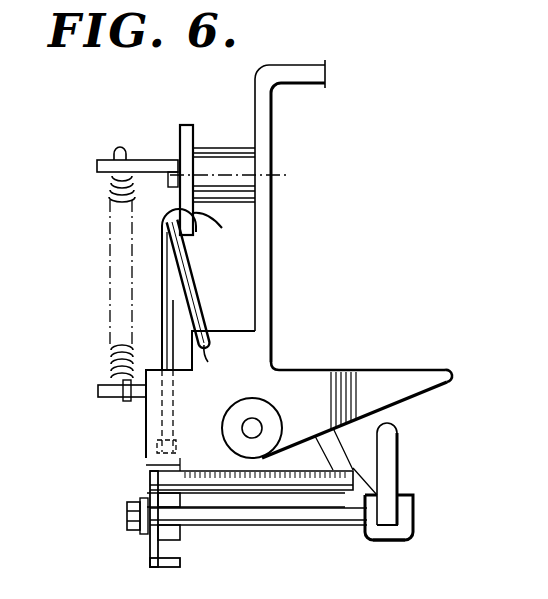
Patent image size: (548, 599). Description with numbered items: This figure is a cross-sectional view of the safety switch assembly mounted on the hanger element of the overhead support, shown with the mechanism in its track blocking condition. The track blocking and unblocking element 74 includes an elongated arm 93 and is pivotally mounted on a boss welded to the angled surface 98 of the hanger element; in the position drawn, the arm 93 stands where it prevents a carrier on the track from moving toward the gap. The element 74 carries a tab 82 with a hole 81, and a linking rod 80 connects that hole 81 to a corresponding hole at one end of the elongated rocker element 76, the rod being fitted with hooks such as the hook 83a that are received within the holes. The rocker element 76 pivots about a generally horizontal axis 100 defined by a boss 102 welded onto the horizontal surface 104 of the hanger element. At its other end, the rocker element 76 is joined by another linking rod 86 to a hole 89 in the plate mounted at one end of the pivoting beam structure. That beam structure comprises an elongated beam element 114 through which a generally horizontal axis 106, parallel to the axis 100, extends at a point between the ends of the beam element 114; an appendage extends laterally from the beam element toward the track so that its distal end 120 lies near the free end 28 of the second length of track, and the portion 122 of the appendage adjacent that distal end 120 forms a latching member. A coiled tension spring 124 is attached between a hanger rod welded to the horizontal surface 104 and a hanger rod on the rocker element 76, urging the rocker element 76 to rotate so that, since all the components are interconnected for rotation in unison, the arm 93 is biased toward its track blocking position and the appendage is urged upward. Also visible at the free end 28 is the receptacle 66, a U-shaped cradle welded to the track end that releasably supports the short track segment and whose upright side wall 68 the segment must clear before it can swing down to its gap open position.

The horizontal surface 104 is at (256, 87).
The rocker element 76 is at (190, 132).
The boss 102 is at (244, 160).
The horizontal axis 100 is at (281, 176).
The coiled tension spring 124 is at (112, 236).
The hook 83a is at (215, 236).
The linking rod 80 is at (184, 278).
The linking rod 86 is at (168, 301).
The tab 82 is at (266, 346).
The track blocking and unblocking element 74 is at (322, 383).
The arm 93 is at (430, 373).
The hole 81 is at (211, 367).
The angled surface 98 is at (252, 418).
The free end 28 is at (396, 434).
The distal end 120 is at (354, 480).
The hole 89 is at (158, 446).
The horizontal axis 106 is at (127, 517).
The beam element 114 is at (151, 551).
The portion of appendage 122 is at (320, 473).
The upright side wall 68 is at (413, 521).
The receptacle 66 is at (404, 541).